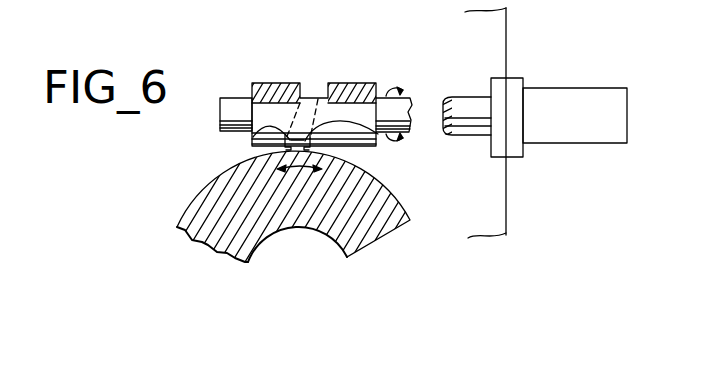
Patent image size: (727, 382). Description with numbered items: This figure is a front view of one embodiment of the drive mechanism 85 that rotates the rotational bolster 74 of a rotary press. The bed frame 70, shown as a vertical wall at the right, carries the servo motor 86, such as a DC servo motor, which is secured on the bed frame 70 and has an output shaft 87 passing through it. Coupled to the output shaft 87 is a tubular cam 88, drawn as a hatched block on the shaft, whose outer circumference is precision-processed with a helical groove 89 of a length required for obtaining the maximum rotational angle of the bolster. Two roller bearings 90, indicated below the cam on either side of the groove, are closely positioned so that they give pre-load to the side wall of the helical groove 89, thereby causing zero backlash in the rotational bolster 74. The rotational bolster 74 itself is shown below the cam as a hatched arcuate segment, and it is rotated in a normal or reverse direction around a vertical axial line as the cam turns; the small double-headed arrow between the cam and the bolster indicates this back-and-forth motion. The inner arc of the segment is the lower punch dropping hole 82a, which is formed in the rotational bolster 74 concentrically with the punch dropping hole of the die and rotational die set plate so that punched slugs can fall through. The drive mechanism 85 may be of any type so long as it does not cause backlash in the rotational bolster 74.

The bed frame 70 is at (490, 215).
The rotational bolster 74 is at (207, 215).
The lower punch dropping hole 82a is at (278, 236).
The drive mechanism 85 is at (369, 79).
The servo motor 86 is at (563, 107).
The output shaft 87 is at (404, 104).
The tubular cam 88 is at (272, 94).
The helical groove 89 is at (315, 94).
The roller bearings 90 is at (253, 137).